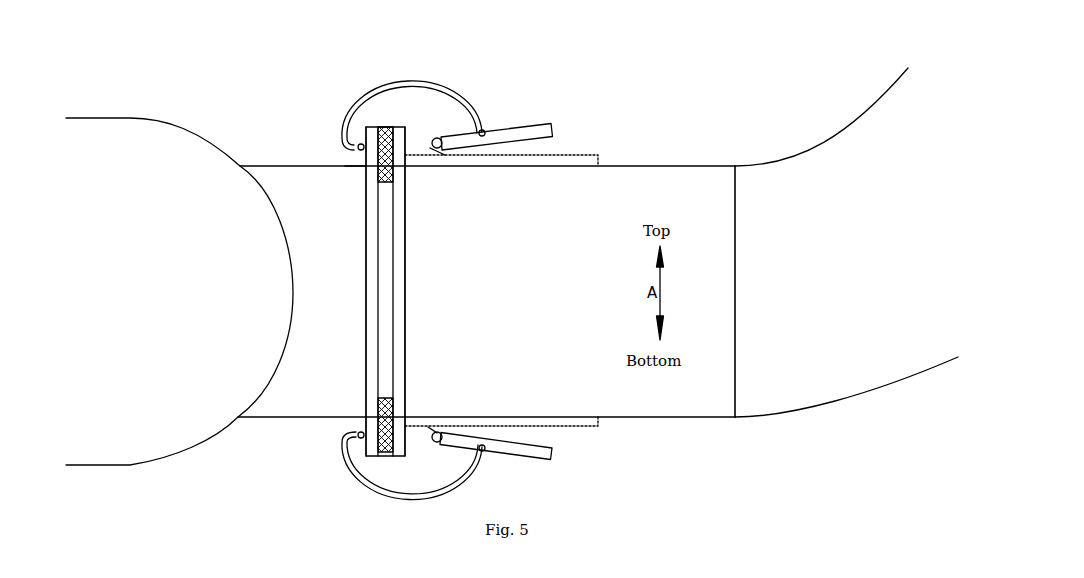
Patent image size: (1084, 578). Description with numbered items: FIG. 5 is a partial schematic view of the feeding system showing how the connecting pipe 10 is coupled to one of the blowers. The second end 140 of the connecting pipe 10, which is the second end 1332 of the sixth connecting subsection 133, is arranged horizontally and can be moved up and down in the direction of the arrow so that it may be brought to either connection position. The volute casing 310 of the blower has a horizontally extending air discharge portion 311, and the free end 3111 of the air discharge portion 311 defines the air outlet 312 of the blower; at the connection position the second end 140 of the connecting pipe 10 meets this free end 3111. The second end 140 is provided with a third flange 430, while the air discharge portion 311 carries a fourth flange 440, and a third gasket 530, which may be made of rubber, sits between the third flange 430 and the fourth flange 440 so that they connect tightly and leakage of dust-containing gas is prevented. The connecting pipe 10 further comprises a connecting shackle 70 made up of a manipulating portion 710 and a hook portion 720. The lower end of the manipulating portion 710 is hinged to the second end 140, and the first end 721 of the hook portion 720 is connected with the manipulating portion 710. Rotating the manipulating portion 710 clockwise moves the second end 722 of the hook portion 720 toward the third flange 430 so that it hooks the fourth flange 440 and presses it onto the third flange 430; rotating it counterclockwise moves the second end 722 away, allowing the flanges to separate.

The volute casing 310 is at (188, 127).
The air discharge portion 311 is at (266, 165).
The air outlet 312 is at (362, 310).
The free end 3111 is at (360, 158).
The connecting pipe 10 is at (828, 242).
The sixth connecting subsection 133 is at (875, 108).
The hook portion 720 is at (385, 127).
The third gasket 530 is at (380, 127).
The third flange 430 is at (402, 137).
The second end of the hook portion 722 is at (350, 143).
The fourth flange 440 is at (357, 133).
The first end of the hook portion 721 is at (483, 130).
The manipulating portion 710 is at (527, 127).
The connecting shackle 70 is at (478, 428).
The second end of the connecting pipe 140 is at (555, 327).
The second end of the sixth connecting subsection 1332 is at (501, 290).